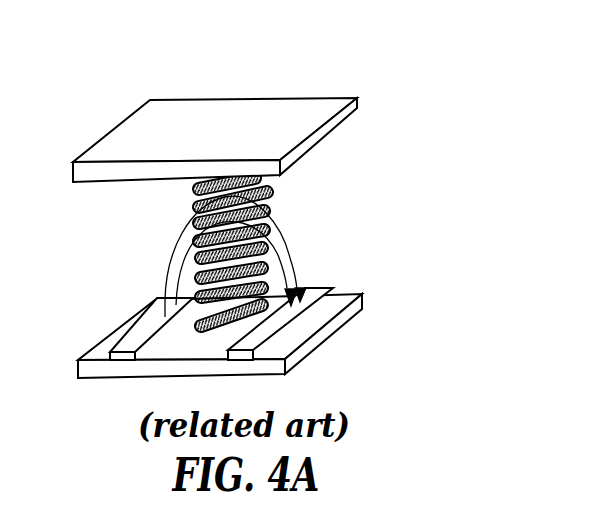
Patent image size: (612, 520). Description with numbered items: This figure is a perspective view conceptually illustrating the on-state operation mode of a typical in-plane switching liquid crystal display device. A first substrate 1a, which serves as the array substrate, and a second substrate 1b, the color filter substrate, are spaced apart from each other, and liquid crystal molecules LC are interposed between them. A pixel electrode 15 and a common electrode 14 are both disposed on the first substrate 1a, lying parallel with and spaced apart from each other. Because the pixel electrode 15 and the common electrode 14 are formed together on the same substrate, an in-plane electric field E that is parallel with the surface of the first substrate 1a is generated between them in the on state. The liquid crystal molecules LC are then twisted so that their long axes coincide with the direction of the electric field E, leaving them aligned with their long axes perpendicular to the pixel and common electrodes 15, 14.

The first substrate 1a is at (350, 316).
The second substrate 1b is at (360, 108).
The common electrode 14 is at (328, 289).
The pixel electrode 15 is at (139, 324).
The liquid crystal LC is at (272, 191).
The electric field E is at (297, 262).